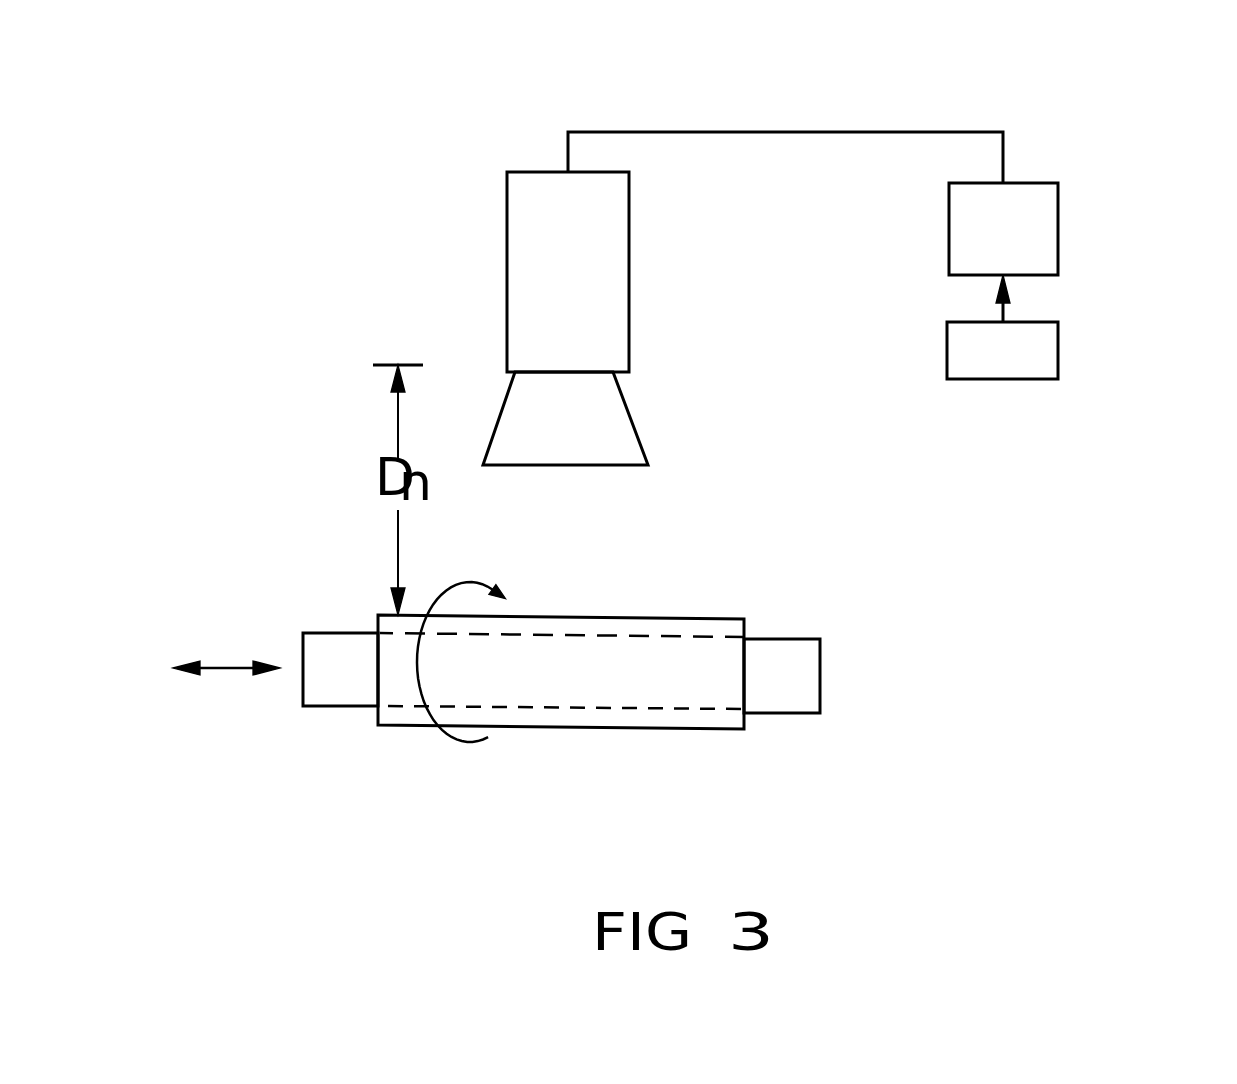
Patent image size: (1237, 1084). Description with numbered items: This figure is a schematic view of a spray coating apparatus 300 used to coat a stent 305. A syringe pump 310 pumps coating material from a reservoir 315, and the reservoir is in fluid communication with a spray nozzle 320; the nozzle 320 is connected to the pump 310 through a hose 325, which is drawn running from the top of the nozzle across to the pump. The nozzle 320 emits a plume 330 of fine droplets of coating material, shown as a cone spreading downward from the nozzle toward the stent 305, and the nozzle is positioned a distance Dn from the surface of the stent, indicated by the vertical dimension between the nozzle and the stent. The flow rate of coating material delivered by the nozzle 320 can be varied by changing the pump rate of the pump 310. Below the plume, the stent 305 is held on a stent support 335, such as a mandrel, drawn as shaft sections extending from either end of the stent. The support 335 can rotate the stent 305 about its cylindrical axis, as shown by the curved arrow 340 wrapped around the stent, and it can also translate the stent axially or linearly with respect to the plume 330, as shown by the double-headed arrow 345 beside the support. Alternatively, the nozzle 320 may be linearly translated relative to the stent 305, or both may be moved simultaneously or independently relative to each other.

The spray coating apparatus 300 is at (815, 753).
The stent 305 is at (683, 619).
The syringe pump 310 is at (1042, 226).
The reservoir 315 is at (1058, 350).
The spray nozzle 320 is at (612, 250).
The hose 325 is at (860, 133).
The plume 330 is at (613, 420).
The stent support 335 is at (820, 683).
The arrow 340 is at (442, 735).
The arrow 345 is at (230, 668).